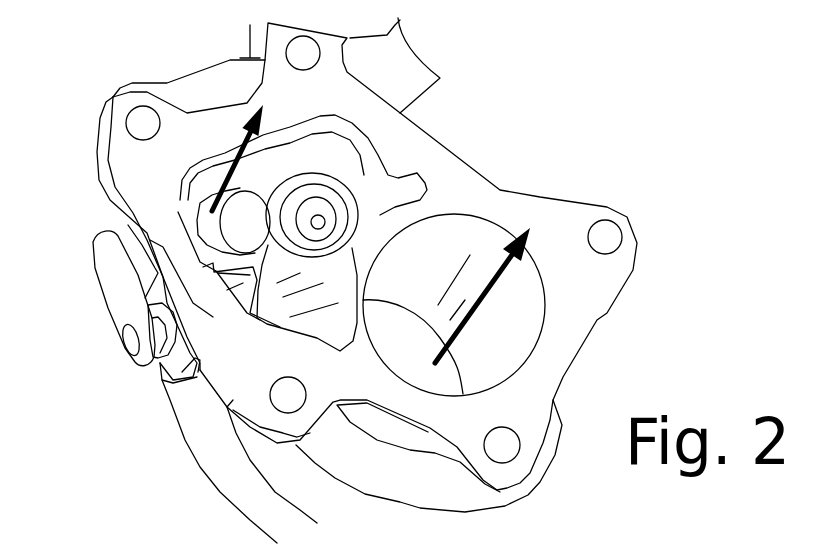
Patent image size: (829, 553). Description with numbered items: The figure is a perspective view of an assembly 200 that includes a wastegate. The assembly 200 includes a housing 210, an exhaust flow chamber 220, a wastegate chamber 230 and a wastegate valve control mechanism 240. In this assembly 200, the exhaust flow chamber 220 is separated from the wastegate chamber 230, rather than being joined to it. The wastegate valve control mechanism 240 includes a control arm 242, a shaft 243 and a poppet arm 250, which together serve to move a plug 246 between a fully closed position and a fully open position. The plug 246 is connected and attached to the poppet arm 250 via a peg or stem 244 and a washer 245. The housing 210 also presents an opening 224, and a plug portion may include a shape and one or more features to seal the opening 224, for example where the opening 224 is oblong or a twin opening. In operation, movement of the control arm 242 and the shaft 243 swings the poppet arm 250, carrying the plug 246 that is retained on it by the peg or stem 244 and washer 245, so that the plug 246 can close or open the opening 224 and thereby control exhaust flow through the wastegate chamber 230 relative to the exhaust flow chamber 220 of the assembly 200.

The assembly 200 is at (126, 48).
The housing 210 is at (530, 192).
The exhaust flow chamber 220 is at (434, 275).
The opening 224 is at (200, 213).
The wastegate chamber 230 is at (327, 154).
The wastegate valve control mechanism 240 is at (140, 386).
The control arm 242 is at (108, 308).
The shaft 243 is at (131, 340).
The peg or stem 244 is at (320, 222).
The washer 245 is at (343, 190).
The plug 246 is at (340, 170).
The poppet arm 250 is at (283, 303).